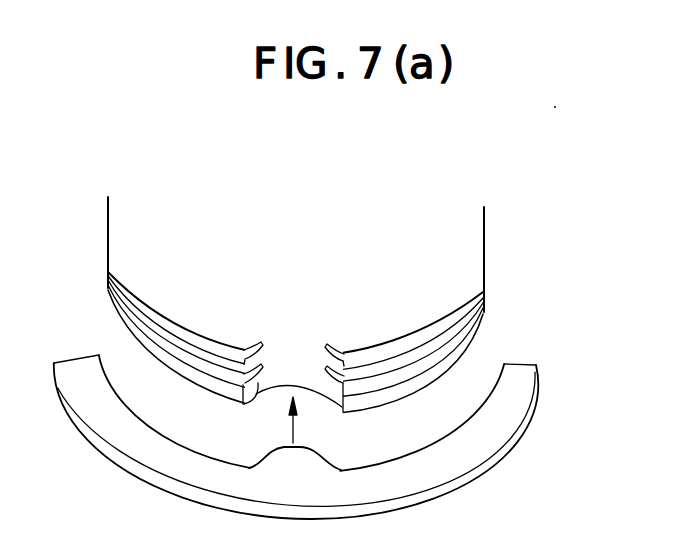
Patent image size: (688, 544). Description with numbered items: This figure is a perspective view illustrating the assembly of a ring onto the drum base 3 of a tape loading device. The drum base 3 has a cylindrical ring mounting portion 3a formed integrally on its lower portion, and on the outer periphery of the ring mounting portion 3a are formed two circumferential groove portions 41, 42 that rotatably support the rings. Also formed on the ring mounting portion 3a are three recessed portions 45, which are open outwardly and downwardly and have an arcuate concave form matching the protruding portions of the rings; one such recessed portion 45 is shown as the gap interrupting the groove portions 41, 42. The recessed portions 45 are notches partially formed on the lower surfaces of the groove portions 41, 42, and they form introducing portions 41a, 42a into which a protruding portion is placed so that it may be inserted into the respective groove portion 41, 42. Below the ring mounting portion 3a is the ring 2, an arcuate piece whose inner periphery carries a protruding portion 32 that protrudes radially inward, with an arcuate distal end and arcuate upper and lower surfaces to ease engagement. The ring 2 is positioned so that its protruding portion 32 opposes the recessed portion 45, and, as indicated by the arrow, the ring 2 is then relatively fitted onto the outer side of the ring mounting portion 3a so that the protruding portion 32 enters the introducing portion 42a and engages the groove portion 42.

The second ring 2 is at (116, 440).
The drum base 3 is at (452, 224).
The ring mounting portion 3a is at (485, 312).
The protruding portion 32 is at (318, 468).
The groove portion 41 is at (192, 374).
The introducing portion 41a is at (258, 384).
The groove portion 42 is at (190, 344).
The introducing portion 42a is at (261, 341).
The recessed portion 45 is at (294, 353).